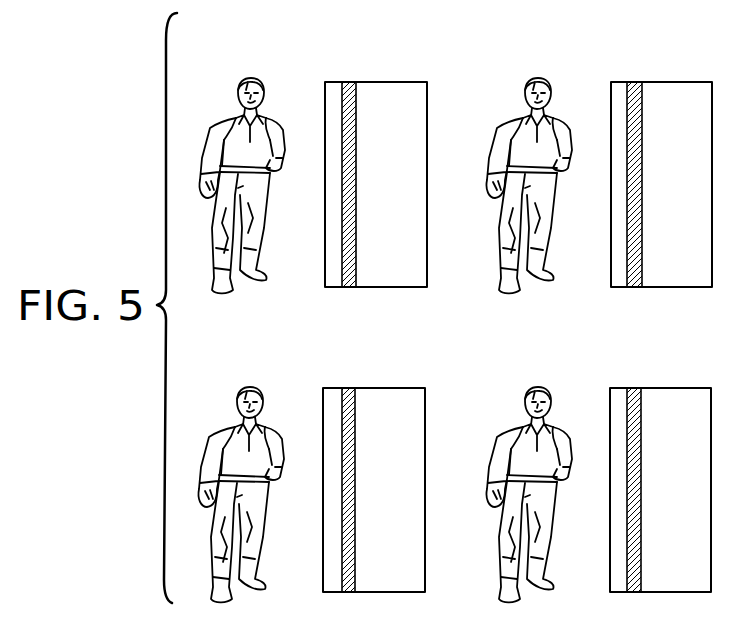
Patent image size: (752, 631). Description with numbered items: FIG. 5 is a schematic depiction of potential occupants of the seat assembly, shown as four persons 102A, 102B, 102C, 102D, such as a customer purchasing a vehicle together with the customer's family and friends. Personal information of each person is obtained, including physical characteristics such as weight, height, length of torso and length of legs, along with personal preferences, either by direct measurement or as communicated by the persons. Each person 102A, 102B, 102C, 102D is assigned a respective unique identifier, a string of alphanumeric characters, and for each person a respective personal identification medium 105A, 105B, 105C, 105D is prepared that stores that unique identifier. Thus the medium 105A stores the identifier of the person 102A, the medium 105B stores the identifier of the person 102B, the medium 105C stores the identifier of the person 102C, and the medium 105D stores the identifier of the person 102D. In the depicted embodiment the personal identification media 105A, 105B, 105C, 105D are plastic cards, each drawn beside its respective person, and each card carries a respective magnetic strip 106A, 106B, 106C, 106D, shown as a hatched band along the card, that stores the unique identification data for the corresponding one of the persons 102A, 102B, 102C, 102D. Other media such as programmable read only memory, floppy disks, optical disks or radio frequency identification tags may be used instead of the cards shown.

The person 102A is at (245, 77).
The person 102B is at (245, 386).
The person 102C is at (532, 78).
The person 102D is at (532, 386).
The personal identification medium 105A is at (402, 82).
The personal identification medium 105B is at (400, 388).
The personal identification medium 105C is at (688, 82).
The personal identification medium 105D is at (688, 388).
The magnetic strip 106A is at (350, 82).
The magnetic strip 106B is at (350, 388).
The magnetic strip 106C is at (636, 82).
The magnetic strip 106D is at (636, 388).